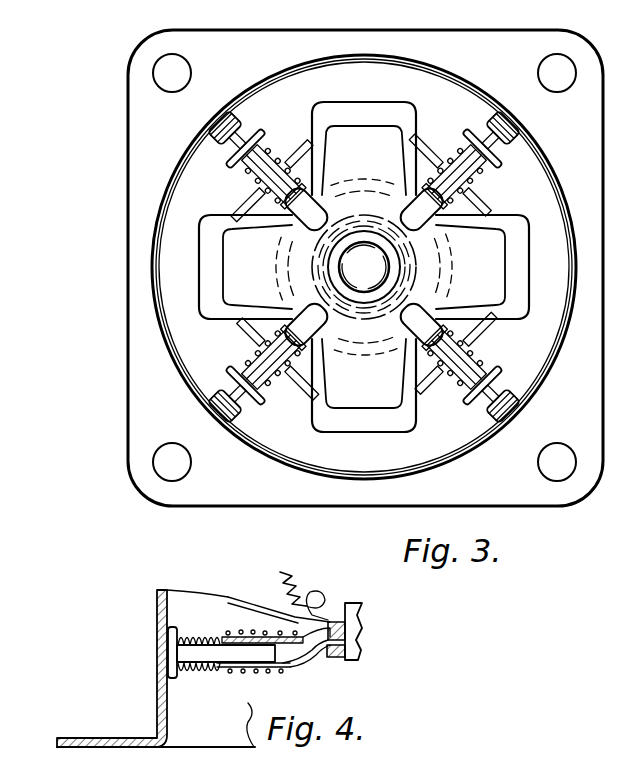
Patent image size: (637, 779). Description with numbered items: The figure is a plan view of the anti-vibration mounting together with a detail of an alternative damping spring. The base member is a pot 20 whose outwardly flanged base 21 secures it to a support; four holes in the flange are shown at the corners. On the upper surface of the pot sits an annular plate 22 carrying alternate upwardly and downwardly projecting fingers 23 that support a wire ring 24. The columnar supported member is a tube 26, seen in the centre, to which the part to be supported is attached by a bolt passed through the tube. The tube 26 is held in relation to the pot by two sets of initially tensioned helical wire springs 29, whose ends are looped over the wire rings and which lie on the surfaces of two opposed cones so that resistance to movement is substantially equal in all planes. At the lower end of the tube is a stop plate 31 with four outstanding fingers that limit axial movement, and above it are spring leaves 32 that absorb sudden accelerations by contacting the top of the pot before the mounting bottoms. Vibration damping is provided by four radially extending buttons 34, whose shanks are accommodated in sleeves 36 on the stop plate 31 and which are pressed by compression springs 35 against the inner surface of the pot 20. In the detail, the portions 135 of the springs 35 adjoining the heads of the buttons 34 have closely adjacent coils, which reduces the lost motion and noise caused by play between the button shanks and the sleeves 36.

In FIG. 4, the pot 20 is at (157, 597).
In FIG. 3, the outwardly flanged base 21 is at (133, 125).
In FIG. 4, the outwardly flanged base 21 is at (66, 738).
In FIG. 3, the annular plate 22 is at (293, 448).
In FIG. 3, the fingers 23 is at (472, 196).
In FIG. 3, the wire ring 24 is at (428, 145).
In FIG. 3, the tube 26 is at (386, 278).
In FIG. 4, the tube 26 is at (340, 605).
In FIG. 4, the helical wire springs 29 is at (298, 578).
In FIG. 3, the lower stop plate 31 is at (379, 181).
In FIG. 4, the lower stop plate 31 is at (320, 652).
In FIG. 3, the spring leaves 32 is at (364, 103).
In FIG. 3, the buttons 34 is at (231, 120).
In FIG. 4, the buttons 34 is at (165, 648).
In FIG. 3, the compression springs 35 is at (222, 153).
In FIG. 4, the compression springs 35 is at (247, 672).
In FIG. 3, the sleeves 36 is at (255, 177).
In FIG. 4, the sleeves 36 is at (262, 680).
In FIG. 4, the portions of the springs 135 is at (183, 628).